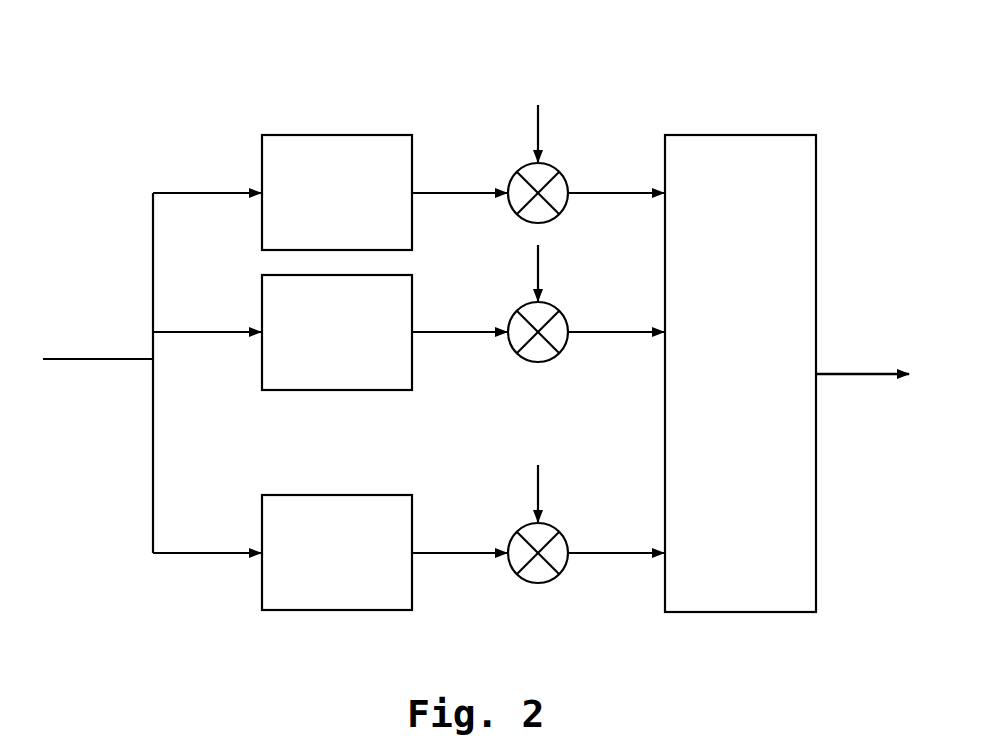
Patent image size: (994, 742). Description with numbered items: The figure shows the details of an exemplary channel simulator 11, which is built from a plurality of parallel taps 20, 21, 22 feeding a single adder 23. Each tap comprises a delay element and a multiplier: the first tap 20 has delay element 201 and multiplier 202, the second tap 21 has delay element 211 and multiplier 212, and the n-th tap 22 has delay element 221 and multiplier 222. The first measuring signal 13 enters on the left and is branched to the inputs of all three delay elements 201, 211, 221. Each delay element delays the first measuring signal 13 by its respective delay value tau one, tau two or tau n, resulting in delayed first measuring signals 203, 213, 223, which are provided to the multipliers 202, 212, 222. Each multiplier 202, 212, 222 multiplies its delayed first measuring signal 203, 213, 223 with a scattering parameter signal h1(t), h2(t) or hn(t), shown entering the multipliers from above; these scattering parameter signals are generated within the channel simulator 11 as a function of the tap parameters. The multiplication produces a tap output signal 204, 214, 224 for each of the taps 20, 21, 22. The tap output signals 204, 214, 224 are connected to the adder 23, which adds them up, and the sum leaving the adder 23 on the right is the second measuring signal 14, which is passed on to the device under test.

The channel simulator 11 is at (699, 70).
The first measuring signal 13 is at (84, 342).
The second measuring signal 14 is at (869, 352).
The tap 20 is at (142, 151).
The tap 21 is at (142, 257).
The tap 22 is at (142, 511).
The adder 23 is at (775, 135).
The delay element 201 is at (262, 157).
The multiplier 202 is at (574, 152).
The delayed first measuring signal 203 is at (430, 180).
The tap output signal 204 is at (629, 210).
The delay element 211 is at (262, 297).
The multiplier 212 is at (574, 292).
The delayed first measuring signal 213 is at (430, 315).
The tap output signal 214 is at (629, 348).
The delay element 221 is at (262, 517).
The multiplier 222 is at (574, 514).
The delayed first measuring signal 223 is at (430, 537).
The tap output signal 224 is at (629, 571).